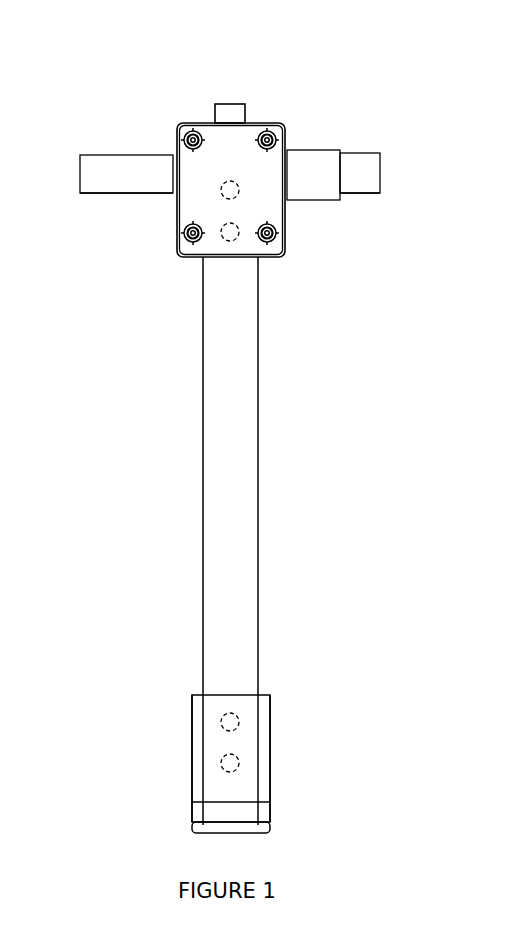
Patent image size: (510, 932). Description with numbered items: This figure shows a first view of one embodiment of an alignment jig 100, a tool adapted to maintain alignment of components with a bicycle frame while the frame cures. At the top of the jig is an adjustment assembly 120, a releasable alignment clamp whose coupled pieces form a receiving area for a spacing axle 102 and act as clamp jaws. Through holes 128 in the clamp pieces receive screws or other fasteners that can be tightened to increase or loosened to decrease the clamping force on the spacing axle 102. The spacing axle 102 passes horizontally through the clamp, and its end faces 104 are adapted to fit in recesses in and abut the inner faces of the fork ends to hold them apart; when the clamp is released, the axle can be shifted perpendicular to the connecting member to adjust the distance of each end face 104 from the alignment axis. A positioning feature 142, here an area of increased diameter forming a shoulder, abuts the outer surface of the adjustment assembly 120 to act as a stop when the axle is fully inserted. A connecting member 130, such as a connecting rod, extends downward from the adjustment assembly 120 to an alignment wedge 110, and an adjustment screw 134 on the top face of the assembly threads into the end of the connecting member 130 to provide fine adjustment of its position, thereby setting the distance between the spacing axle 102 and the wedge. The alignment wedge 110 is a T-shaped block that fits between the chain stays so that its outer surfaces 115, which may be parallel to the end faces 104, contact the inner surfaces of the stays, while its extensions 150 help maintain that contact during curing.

The alignment jig 100 is at (145, 561).
The spacing axle 102 is at (97, 173).
The end faces 104 is at (80, 193).
The alignment wedge 110 is at (240, 790).
The outer surfaces 115 is at (192, 780).
The adjustment assembly 120 is at (264, 195).
The through holes 128 is at (187, 134).
The connecting member 130 is at (233, 535).
The adjustment screw 134 is at (230, 112).
The positioning features 142 is at (318, 167).
The extensions 150 is at (245, 815).